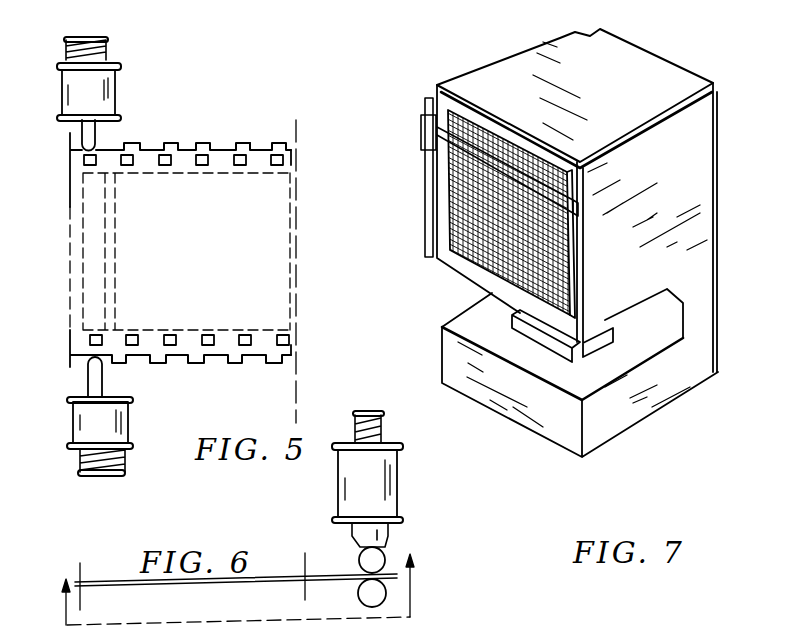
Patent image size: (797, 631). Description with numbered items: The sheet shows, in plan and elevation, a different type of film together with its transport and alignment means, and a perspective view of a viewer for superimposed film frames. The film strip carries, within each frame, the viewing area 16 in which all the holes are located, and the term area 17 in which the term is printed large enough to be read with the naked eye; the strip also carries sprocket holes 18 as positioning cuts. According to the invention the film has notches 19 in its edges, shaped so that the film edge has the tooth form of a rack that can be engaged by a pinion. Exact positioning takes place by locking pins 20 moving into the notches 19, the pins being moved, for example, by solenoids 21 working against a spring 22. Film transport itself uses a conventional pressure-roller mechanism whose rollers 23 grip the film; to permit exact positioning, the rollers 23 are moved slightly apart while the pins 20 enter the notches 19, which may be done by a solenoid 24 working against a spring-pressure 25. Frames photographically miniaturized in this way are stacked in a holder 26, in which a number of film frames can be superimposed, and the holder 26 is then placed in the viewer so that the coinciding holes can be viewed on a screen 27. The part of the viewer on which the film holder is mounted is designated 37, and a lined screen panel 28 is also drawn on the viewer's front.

In FIG. 5, the viewing area 16 is at (248, 147).
In FIG. 5, the term area 17 is at (80, 174).
In FIG. 5, the sprocket holes 18 is at (282, 160).
In FIG. 5, the notches 19 is at (216, 148).
In FIG. 5, the locking pins 20 is at (90, 130).
In FIG. 5, the solenoids 21 is at (104, 92).
In FIG. 5, the spring 22 is at (108, 45).
In FIG. 6, the rollers 23 is at (385, 556).
In FIG. 6, the solenoid 24 is at (386, 487).
In FIG. 6, the spring-pressure 25 is at (382, 428).
In FIG. 7, the holder 26 is at (566, 340).
In FIG. 7, the screen 27 is at (440, 258).
In FIG. 7, the grid screen 28 is at (460, 147).
In FIG. 7, the viewer mounting part 37 is at (628, 356).